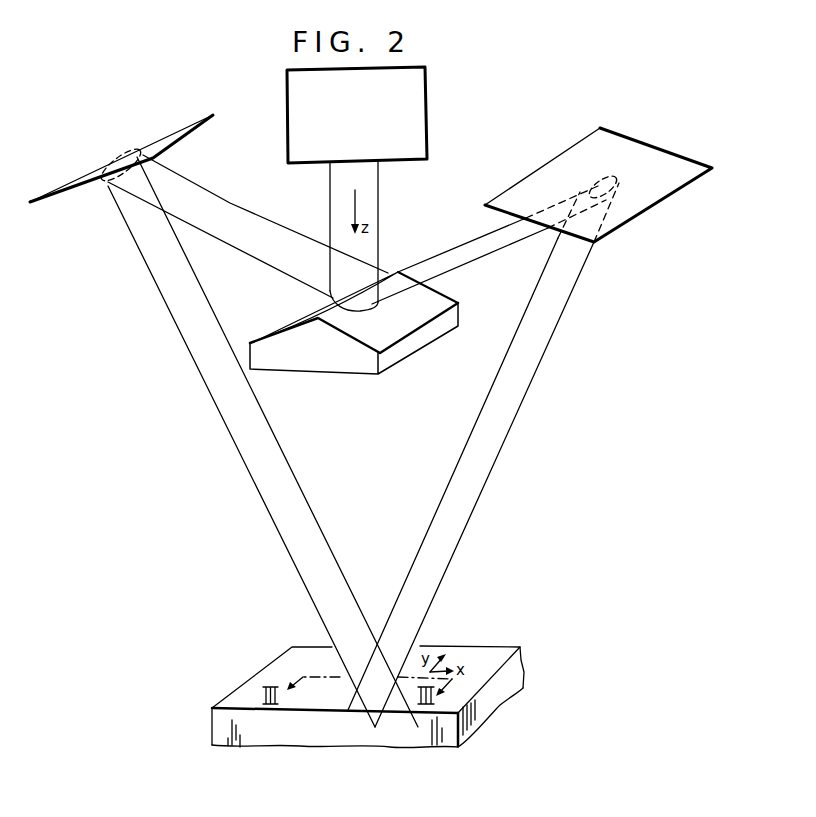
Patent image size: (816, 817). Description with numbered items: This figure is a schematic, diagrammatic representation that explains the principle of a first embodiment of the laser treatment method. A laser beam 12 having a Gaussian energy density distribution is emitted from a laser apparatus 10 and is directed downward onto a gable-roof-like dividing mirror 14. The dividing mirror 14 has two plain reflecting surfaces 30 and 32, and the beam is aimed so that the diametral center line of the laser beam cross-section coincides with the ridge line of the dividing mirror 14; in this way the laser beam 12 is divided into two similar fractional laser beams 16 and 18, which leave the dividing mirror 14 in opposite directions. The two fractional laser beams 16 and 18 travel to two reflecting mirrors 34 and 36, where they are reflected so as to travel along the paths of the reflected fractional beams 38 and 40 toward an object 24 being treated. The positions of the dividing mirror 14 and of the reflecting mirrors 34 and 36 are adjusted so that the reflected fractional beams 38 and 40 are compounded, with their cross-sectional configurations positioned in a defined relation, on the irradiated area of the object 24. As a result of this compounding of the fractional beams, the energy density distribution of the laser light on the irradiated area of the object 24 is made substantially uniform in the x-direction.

The laser apparatus 10 is at (427, 116).
The laser beam 12 is at (336, 197).
The dividing mirror 14 is at (328, 363).
The fractional laser beam 16 is at (478, 240).
The fractional laser beam 18 is at (252, 248).
The object being treated 24 is at (287, 658).
The plain reflecting surface 30 is at (430, 296).
The plain reflecting surface 32 is at (303, 316).
The reflecting mirror 34 is at (562, 165).
The reflecting mirror 36 is at (140, 142).
The reflected fractional beam 38 is at (490, 452).
The reflected fractional beam 40 is at (242, 443).